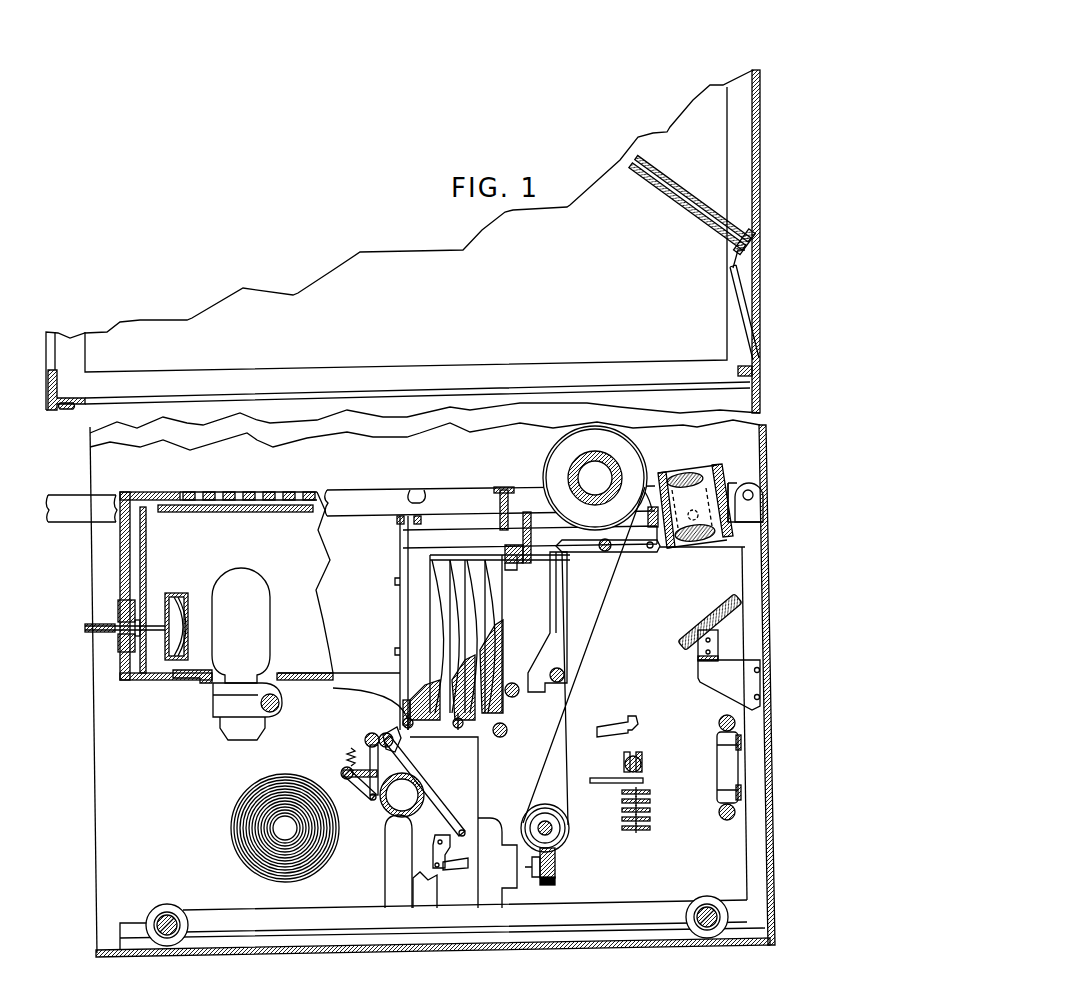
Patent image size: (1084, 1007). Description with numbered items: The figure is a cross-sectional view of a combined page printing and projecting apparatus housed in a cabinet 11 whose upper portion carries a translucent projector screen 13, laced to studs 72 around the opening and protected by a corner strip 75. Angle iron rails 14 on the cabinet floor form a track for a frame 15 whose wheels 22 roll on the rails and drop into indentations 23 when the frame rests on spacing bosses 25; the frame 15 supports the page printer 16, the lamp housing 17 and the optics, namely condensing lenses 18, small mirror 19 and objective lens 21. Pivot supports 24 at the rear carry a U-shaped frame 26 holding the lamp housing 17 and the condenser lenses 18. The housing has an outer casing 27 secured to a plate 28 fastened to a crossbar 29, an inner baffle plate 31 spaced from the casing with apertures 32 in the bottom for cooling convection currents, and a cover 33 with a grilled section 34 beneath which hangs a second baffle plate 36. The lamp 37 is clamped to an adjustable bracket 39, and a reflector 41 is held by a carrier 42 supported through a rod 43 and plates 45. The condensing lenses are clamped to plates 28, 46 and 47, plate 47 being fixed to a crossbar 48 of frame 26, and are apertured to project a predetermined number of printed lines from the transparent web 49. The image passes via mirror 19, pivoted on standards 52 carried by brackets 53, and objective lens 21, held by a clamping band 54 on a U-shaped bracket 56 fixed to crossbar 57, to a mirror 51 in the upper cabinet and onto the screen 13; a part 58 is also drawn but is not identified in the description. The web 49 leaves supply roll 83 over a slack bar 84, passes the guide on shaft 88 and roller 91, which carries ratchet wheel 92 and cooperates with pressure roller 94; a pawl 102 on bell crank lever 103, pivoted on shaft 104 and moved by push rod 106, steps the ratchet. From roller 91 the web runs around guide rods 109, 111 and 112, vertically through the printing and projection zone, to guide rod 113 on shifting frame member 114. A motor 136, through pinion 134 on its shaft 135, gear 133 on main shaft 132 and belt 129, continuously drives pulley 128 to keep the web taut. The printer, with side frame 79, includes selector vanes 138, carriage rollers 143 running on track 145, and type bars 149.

The cabinet 11 is at (774, 400).
The translucent projector screen 13 is at (58, 352).
The angle iron rails 14 is at (128, 940).
The frame 15 is at (757, 913).
The page printing apparatus 16 is at (658, 801).
The lamp housing 17 is at (112, 578).
The condensing lenses 18 is at (509, 620).
The small mirror 19 is at (735, 600).
The objective lens 21 is at (732, 485).
The wheels 22 is at (160, 905).
The indentations 23 is at (183, 952).
The pivot supports 24 is at (760, 507).
The spacing bosses 25 is at (265, 930).
The U-shaped frame 26 is at (422, 495).
The outer casing 27 is at (122, 681).
The plate 28 is at (398, 522).
The crossbar 29 is at (410, 490).
The baffle plate 31 is at (148, 560).
The apertures 32 is at (133, 681).
The cover 33 is at (135, 492).
The grilled section 34 is at (205, 492).
The baffle plate 36 is at (262, 513).
The lamp 37 is at (270, 600).
The bracket 39 is at (213, 700).
The reflector 41 is at (185, 600).
The carrier 42 is at (176, 595).
The rod 43 is at (150, 626).
The plates 45 is at (128, 660).
The plate 46 is at (457, 720).
The plate 47 is at (500, 490).
The crossbar 48 is at (526, 510).
The record strip or web 49 is at (568, 612).
The mirror 51 is at (660, 208).
The standards 52 is at (718, 640).
The brackets 53 is at (727, 690).
The clamping band 54 is at (702, 470).
The U-shaped bracket 56 is at (666, 474).
The crossbar 57 is at (645, 470).
The link 58 is at (742, 300).
The studs 72 is at (73, 412).
The corner strip 75 is at (53, 412).
The side frame 79 is at (340, 690).
The supply roll 83 is at (240, 800).
The slack bar 84 is at (345, 771).
The shaft 88 is at (390, 806).
The roller 91 is at (382, 736).
The ratchet wheel 92 is at (423, 760).
The pressure roller 94 is at (366, 748).
The pawl member 102 is at (413, 746).
The bell crank lever 103 is at (450, 860).
The pivot shaft 104 is at (438, 843).
The push rod 106 is at (455, 869).
The guide rod 109 is at (502, 738).
The guide rod 111 is at (514, 698).
The guide rod 112 is at (564, 674).
The guide rod 113 is at (570, 553).
The U-shaped shifting frame member 114 is at (637, 553).
The pulley 128 is at (550, 448).
The belt 129 is at (530, 795).
The main operating shaft 132 is at (550, 833).
The gear 133 is at (564, 831).
The pinion gear 134 is at (556, 870).
The shaft 135 is at (528, 870).
The motor 136 is at (465, 815).
The selector vanes 138 is at (652, 815).
The rollers 143 is at (645, 760).
The track 145 is at (645, 780).
The type bars 149 is at (615, 722).